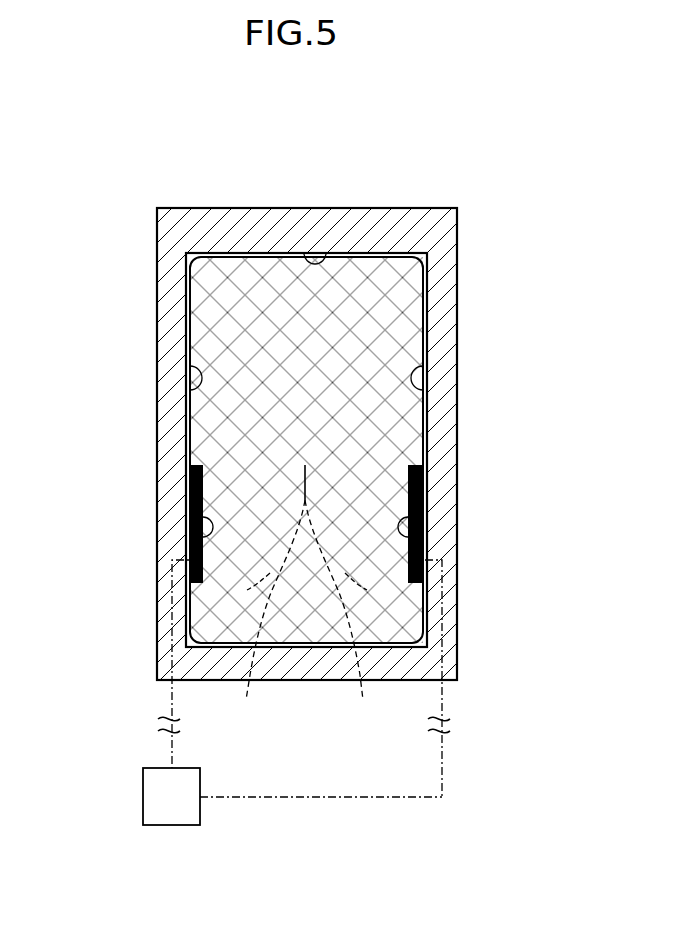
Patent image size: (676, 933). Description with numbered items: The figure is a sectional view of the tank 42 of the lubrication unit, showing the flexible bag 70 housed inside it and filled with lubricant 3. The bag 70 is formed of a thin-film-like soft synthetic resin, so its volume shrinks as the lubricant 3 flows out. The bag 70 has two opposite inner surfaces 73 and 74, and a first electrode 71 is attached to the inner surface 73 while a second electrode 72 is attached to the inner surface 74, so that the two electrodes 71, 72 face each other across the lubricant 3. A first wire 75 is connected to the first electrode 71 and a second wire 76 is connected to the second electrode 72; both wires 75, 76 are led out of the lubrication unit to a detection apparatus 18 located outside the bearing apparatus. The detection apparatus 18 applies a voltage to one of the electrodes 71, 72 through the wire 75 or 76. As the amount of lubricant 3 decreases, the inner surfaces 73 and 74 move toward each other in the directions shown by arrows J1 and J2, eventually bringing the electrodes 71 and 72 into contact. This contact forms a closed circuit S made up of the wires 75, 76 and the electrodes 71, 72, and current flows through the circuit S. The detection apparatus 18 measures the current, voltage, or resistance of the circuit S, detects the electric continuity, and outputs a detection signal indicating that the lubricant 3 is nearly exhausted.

The tank 42 is at (243, 252).
The lubricant 3 is at (367, 313).
The bag 70 is at (330, 262).
The inner surface 73 is at (195, 366).
The inner surface 74 is at (420, 368).
The first electrode 71 is at (200, 537).
The second electrode 72 is at (425, 537).
The first wire 75 is at (172, 695).
The second wire 76 is at (442, 695).
The detection apparatus 18 is at (292, 796).
The closed circuit S is at (443, 775).
The arrow J1 is at (294, 494).
The arrow J2 is at (387, 475).